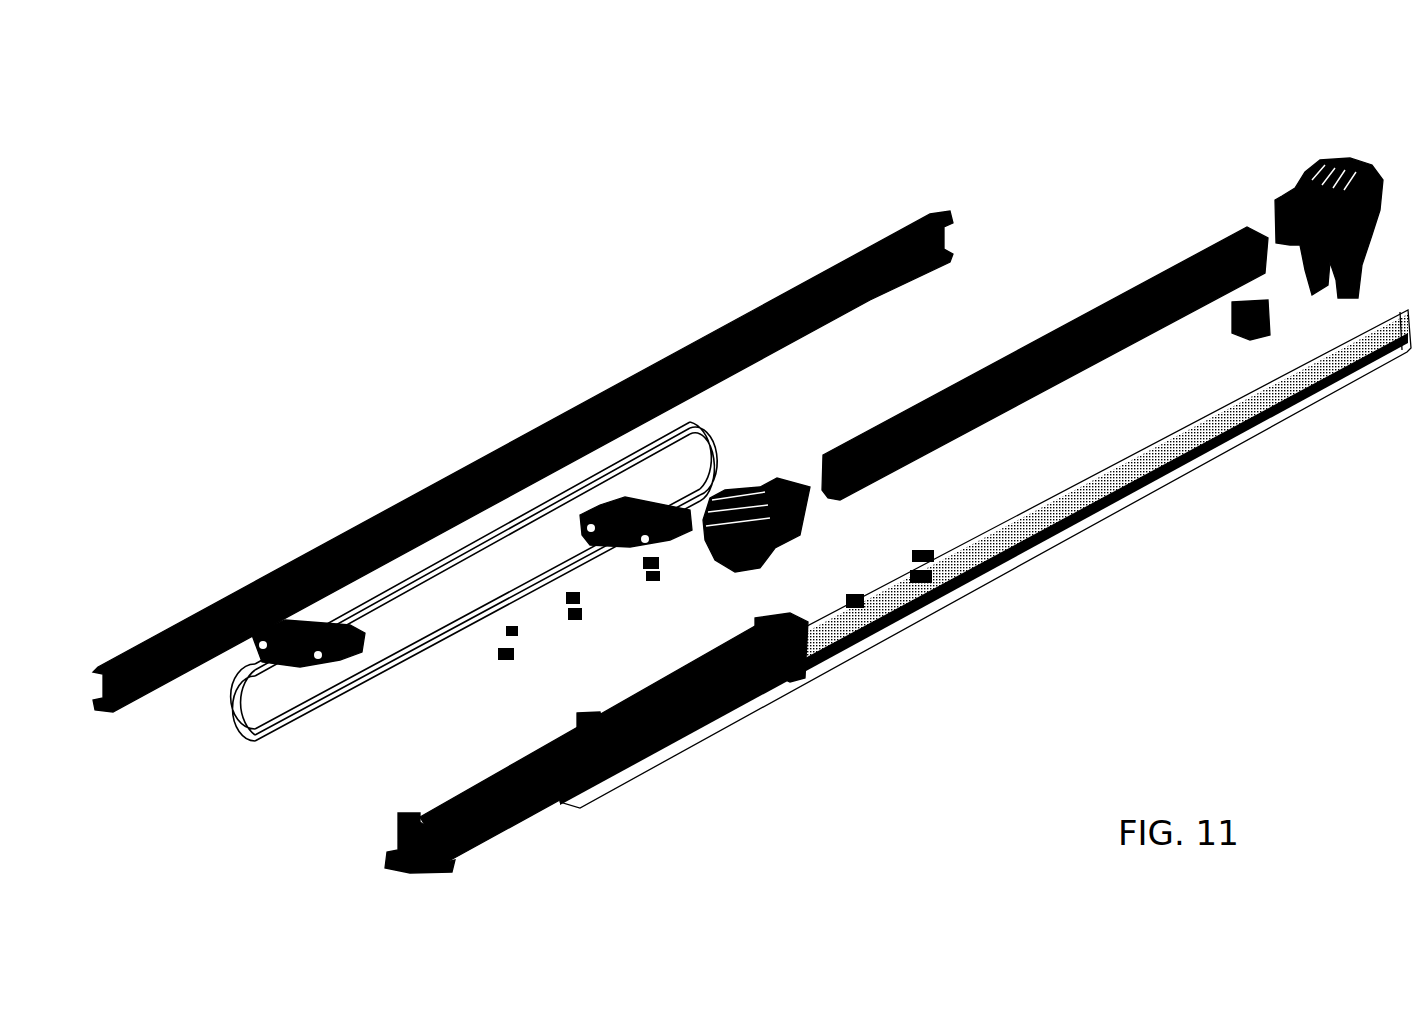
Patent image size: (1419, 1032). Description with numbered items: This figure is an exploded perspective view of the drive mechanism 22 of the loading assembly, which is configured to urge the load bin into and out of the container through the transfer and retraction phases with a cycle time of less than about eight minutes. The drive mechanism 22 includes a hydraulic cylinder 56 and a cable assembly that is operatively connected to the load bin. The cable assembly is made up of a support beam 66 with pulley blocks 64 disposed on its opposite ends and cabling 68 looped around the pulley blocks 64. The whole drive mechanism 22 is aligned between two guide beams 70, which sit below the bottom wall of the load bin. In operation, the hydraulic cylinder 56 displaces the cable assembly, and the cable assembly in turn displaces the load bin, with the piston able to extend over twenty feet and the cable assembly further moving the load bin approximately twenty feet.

The drive mechanism 22 is at (553, 148).
The hydraulic cylinder 56 is at (487, 830).
The pulley blocks 64 is at (770, 480).
The support beam 66 is at (1078, 315).
The cabling 68 is at (308, 772).
The guide beams 70 is at (825, 272).